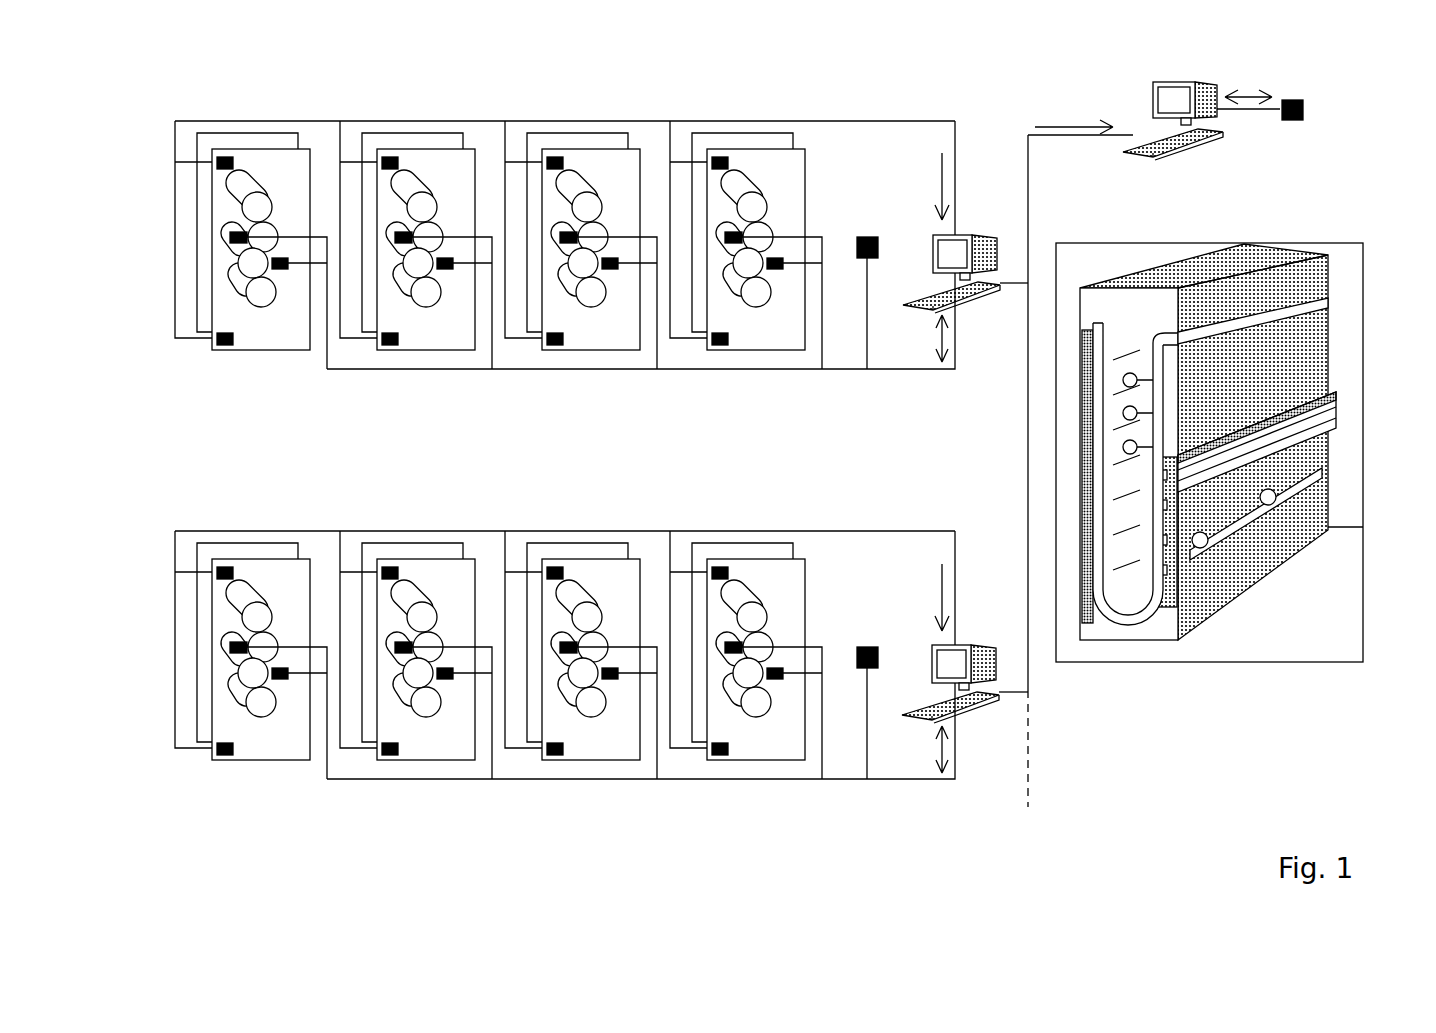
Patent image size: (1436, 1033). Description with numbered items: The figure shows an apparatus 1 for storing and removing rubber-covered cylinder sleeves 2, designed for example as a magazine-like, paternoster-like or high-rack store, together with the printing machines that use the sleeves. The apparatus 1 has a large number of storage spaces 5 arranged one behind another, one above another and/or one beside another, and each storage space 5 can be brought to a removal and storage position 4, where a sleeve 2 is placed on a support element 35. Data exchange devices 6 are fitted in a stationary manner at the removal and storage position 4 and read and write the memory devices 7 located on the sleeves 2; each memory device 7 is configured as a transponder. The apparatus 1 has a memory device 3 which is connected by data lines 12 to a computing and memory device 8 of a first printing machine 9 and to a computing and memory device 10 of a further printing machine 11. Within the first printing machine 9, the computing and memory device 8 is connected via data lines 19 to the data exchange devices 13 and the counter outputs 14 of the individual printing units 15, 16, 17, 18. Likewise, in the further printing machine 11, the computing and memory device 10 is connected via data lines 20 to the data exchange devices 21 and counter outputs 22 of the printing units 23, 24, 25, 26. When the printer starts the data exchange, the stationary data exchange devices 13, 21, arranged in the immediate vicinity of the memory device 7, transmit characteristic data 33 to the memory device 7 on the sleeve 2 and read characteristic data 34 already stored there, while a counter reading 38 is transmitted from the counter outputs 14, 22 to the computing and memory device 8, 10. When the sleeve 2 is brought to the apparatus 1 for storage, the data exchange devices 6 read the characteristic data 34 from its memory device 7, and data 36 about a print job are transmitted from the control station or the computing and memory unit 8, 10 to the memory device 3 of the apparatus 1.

The apparatus 1 is at (1246, 688).
The rubber-covered cylinder sleeve 2 is at (1327, 492).
The memory device 3 is at (1153, 87).
The removal and storage position 4 is at (1339, 446).
The storage space 5 is at (1220, 573).
The data exchange device 6 is at (1307, 112).
The memory device 7 is at (1300, 553).
The computing and memory device 8 is at (982, 233).
The first printing machine 9 is at (728, 110).
The computing and memory device 10 is at (982, 708).
The further printing machine 11 is at (656, 515).
The data line 12 is at (1027, 431).
The data exchange device 13 is at (575, 232).
The counter output 14 is at (556, 158).
The printing unit 15 is at (755, 338).
The printing unit 16 is at (627, 338).
The printing unit 17 is at (438, 338).
The printing unit 18 is at (262, 332).
The data line 19 is at (862, 120).
The data line 20 is at (822, 530).
The data exchange device 21 is at (228, 646).
The counter output 22 is at (220, 565).
The printing unit 23 is at (750, 572).
The printing unit 24 is at (593, 578).
The printing unit 25 is at (430, 577).
The printing unit 26 is at (263, 580).
The characteristic data 33 is at (937, 338).
The characteristic data 34 is at (1237, 93).
The support element 35 is at (1342, 470).
The data 36 is at (1062, 127).
The counter reading 38 is at (940, 181).